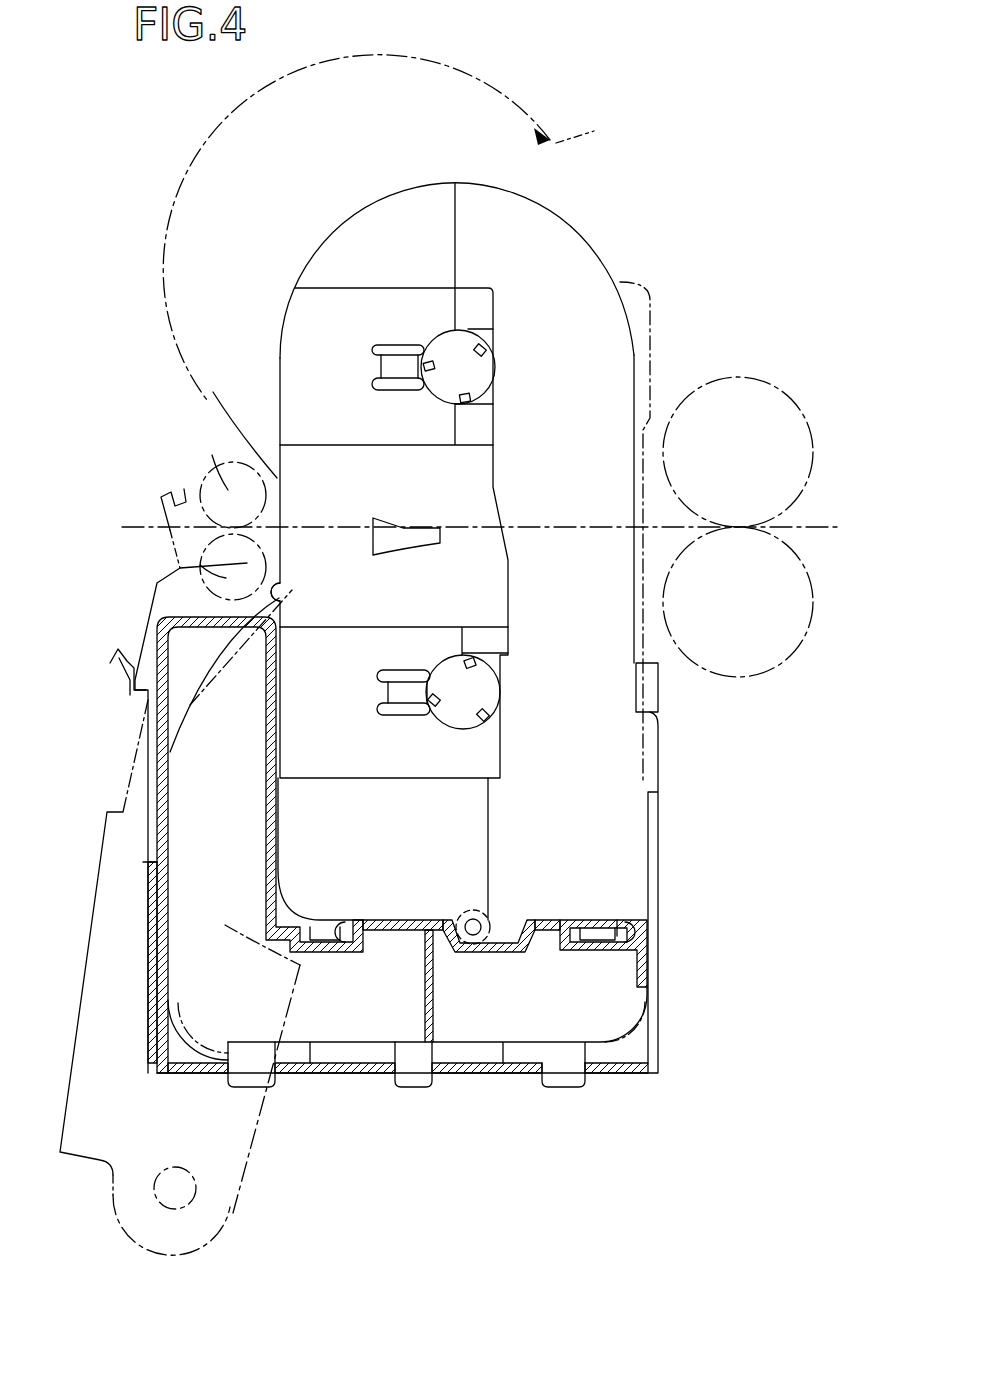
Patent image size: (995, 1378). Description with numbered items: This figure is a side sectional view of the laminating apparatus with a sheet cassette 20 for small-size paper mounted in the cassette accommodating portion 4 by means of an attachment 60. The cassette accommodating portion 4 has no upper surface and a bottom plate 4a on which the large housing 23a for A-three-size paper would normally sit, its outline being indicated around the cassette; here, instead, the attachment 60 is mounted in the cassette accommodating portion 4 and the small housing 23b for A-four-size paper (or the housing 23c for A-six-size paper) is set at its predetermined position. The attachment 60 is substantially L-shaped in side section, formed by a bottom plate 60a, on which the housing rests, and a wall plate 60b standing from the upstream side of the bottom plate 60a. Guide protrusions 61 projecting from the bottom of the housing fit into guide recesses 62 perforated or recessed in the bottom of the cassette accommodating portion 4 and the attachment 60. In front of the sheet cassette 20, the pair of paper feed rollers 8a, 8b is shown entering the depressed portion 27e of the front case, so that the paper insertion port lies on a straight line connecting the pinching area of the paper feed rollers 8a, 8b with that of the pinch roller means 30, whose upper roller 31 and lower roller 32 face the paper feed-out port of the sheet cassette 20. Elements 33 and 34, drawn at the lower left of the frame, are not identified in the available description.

The cassette accommodating portion 4 is at (450, 932).
The bottom plate 4a is at (481, 1066).
The paper feed roller 8a is at (224, 487).
The paper feed roller 8b is at (200, 566).
The sheet cassette 20 is at (514, 459).
The housing for A3-size paper 23a is at (448, 76).
The small housing for A4-size paper 23b is at (671, 277).
The housing for A6-size paper 23c is at (617, 307).
The depressed portion 27e is at (284, 597).
The pinch roller means 30 is at (755, 527).
The upper roller 31 is at (703, 400).
The lower roller 32 is at (795, 628).
The shaft 33 is at (185, 1193).
The guide plate 34 is at (232, 1123).
The attachment 60 is at (402, 845).
The bottom plate 60a is at (380, 918).
The wall plate 60b is at (276, 750).
The guide protrusions 61 is at (262, 1088).
The guide recesses 62 is at (346, 942).